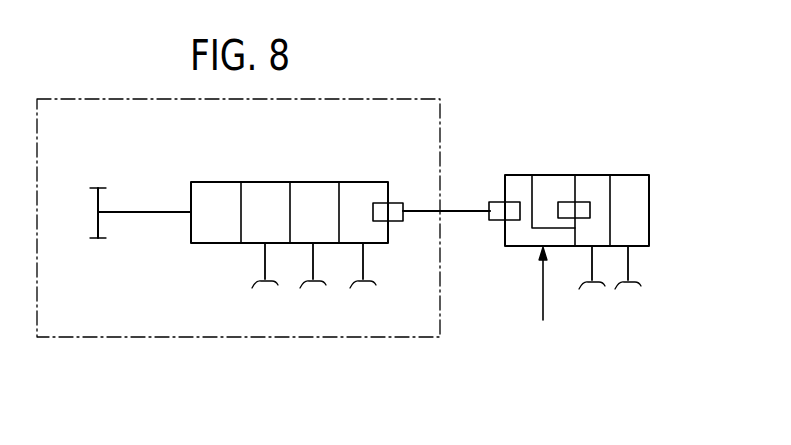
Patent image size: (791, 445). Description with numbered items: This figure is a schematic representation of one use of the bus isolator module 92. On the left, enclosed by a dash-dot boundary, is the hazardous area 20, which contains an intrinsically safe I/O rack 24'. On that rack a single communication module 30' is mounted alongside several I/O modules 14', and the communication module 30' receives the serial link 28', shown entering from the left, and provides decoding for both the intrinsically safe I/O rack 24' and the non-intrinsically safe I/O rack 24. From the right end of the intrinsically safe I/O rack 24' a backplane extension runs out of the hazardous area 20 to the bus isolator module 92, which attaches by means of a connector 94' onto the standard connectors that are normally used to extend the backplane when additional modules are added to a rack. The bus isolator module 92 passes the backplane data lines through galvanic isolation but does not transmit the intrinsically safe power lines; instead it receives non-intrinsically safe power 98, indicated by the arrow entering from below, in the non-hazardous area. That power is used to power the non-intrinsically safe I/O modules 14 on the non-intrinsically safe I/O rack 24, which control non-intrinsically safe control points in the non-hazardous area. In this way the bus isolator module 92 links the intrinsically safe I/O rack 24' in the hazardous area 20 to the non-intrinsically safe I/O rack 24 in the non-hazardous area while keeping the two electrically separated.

The hazardous area 20 is at (112, 99).
The intrinsically safe I/O rack 24' is at (297, 210).
The communication module 30' is at (223, 212).
The I/O module 14' is at (317, 235).
The serial link 28' is at (140, 247).
The connector 94' is at (489, 181).
The bus isolator module 92 is at (545, 168).
The non-intrinsically safe I/O module 14 is at (608, 202).
The non-intrinsically safe I/O rack 24 is at (596, 198).
The non-intrinsically safe power 98 is at (543, 300).